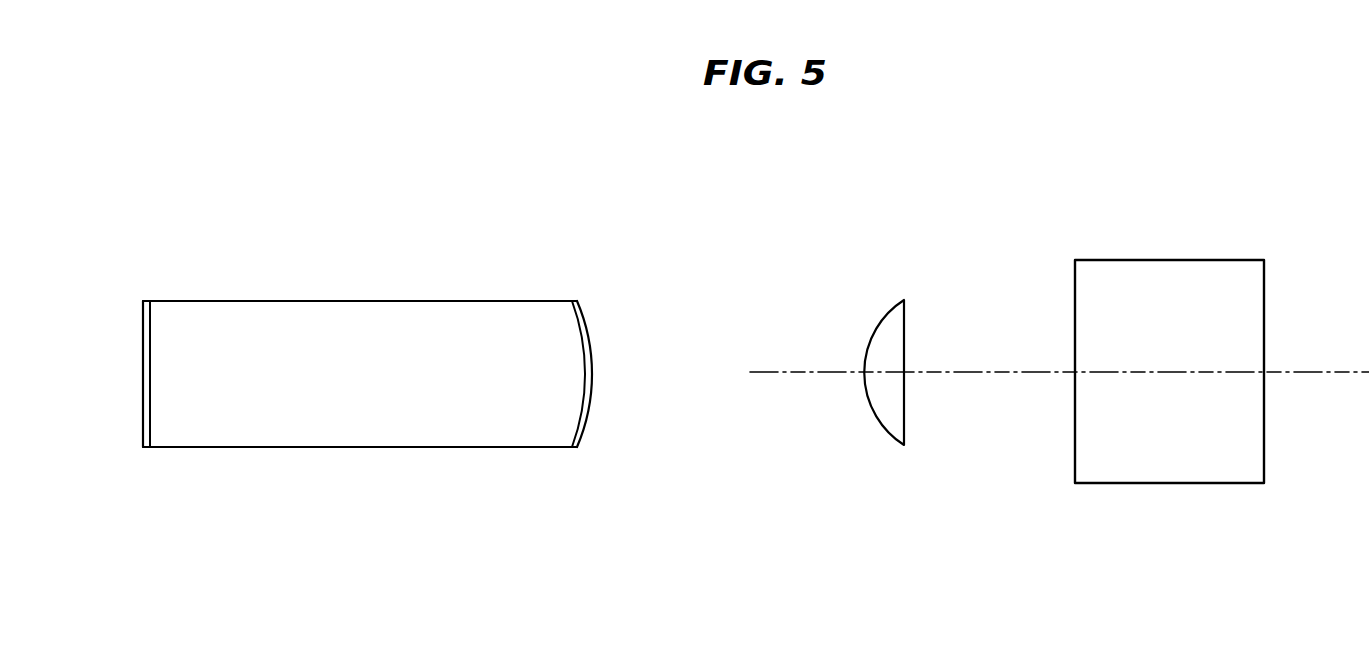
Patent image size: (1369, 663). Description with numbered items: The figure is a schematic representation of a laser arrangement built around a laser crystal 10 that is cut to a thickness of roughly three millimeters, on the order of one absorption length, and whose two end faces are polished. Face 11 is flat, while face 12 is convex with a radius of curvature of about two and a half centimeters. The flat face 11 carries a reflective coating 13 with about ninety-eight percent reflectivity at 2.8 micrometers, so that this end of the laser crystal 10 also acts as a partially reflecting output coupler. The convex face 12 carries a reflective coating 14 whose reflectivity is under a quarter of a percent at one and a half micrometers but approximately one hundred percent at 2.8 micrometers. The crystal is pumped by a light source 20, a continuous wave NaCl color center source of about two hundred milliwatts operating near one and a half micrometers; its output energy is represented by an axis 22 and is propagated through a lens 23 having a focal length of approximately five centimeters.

The laser crystal 10 is at (336, 315).
The end face 11 is at (118, 328).
The end face 12 is at (598, 318).
The reflective coating 13 is at (143, 437).
The reflective coating 14 is at (580, 438).
The light source 20 is at (1140, 457).
The axis 22 is at (770, 371).
The lens 23 is at (878, 422).